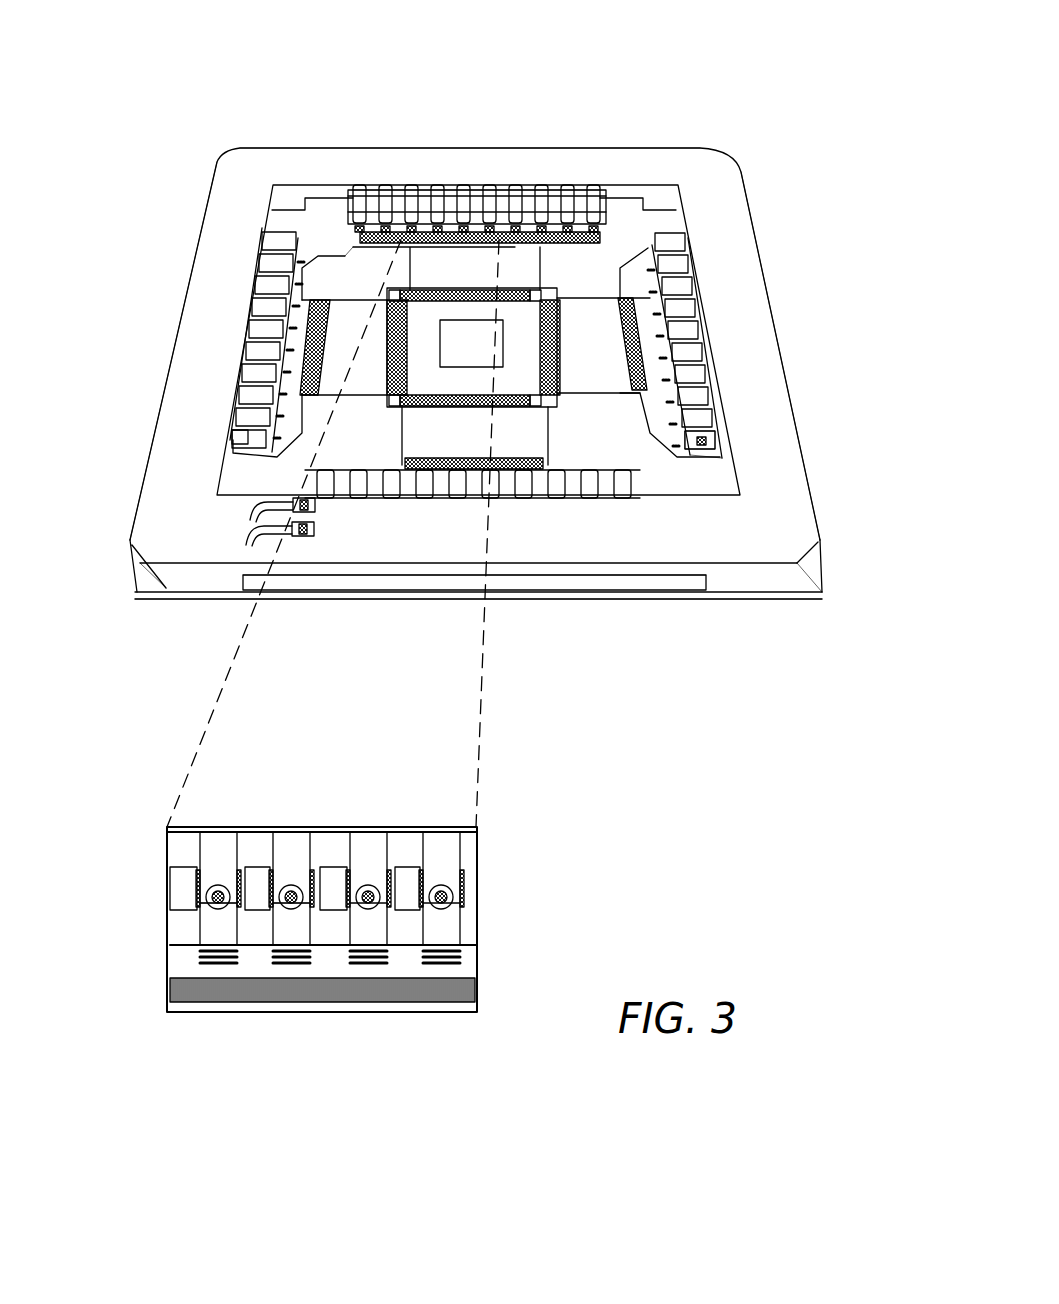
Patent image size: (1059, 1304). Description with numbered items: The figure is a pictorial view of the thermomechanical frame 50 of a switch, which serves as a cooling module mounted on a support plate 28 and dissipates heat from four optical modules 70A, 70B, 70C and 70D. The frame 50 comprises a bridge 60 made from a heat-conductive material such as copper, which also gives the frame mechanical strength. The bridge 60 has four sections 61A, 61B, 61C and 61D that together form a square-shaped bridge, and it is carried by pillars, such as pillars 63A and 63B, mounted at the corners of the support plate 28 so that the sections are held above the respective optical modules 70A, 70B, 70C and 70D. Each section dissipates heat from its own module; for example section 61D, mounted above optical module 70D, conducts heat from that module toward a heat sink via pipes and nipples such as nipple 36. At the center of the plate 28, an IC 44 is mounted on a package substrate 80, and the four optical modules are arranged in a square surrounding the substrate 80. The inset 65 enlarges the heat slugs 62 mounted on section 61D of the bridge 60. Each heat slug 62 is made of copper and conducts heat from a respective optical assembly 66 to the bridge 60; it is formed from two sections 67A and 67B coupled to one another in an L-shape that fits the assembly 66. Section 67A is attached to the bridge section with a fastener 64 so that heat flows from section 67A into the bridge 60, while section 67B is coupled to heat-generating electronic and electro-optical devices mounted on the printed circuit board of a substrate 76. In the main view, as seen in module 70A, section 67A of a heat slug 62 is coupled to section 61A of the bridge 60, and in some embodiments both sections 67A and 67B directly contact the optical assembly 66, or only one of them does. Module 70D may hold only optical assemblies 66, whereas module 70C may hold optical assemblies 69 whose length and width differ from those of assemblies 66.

The support plate 28 is at (820, 580).
The nipple 36 is at (327, 547).
The IC 44 is at (485, 358).
The thermomechanical frame 50 is at (94, 68).
The bridge 60 is at (759, 152).
The section 61A is at (742, 240).
The section 61B is at (428, 553).
The section 61C is at (192, 271).
The section 61D is at (345, 163).
The heat slug 62 is at (540, 185).
The pillar 63A is at (775, 580).
The pillar 63B is at (202, 580).
The fastener 64 is at (222, 912).
The inset 65 is at (478, 945).
The optical assembly 66 is at (700, 443).
The section 67A is at (710, 437).
The section 67B is at (707, 403).
The optical assembly 69 is at (243, 442).
The optical module 70A is at (655, 220).
The optical module 70B is at (585, 620).
The optical module 70C is at (238, 481).
The optical module 70D is at (336, 213).
The substrate 76 is at (314, 268).
The package substrate 80 is at (530, 323).